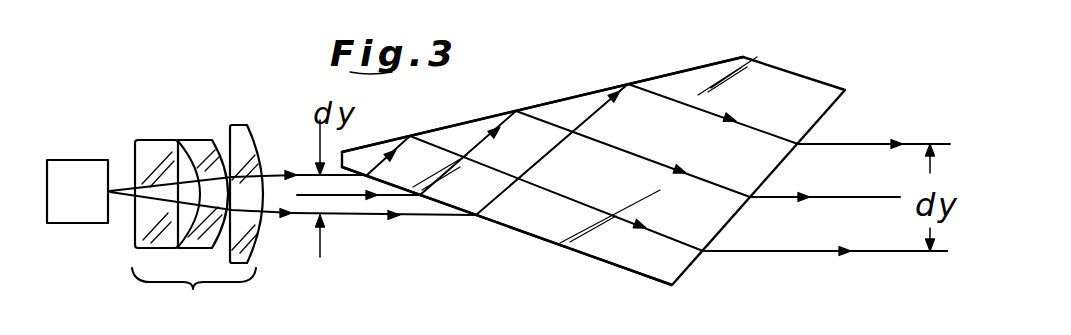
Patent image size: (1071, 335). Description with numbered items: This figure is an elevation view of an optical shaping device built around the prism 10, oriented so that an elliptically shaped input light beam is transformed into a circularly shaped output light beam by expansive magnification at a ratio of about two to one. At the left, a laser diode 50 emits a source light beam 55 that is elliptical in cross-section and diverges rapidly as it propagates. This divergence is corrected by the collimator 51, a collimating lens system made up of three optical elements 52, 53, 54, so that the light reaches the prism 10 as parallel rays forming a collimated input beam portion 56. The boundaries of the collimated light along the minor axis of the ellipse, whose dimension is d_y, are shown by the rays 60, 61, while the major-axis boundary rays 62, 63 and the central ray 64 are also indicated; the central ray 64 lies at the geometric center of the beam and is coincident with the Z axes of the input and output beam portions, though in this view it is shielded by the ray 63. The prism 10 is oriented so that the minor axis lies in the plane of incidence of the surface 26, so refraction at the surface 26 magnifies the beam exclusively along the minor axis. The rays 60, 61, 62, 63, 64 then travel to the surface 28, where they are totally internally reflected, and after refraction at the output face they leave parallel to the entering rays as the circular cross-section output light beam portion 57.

The prism 10 is at (812, 64).
The input surface 26 is at (607, 263).
The reflecting surface 28 is at (615, 84).
The laser diode 50 is at (50, 268).
The collimator 51 is at (206, 194).
The optical element 52 is at (158, 148).
The optical element 53 is at (203, 148).
The optical element 54 is at (246, 140).
The source light beam 55 is at (127, 199).
The input beam portion 56 is at (295, 230).
The output light beam portion 57 is at (782, 262).
The ray 60 is at (293, 172).
The ray 61 is at (468, 218).
The ray 62 is at (624, 155).
The ray 63 is at (660, 141).
The central ray 64 is at (703, 181).